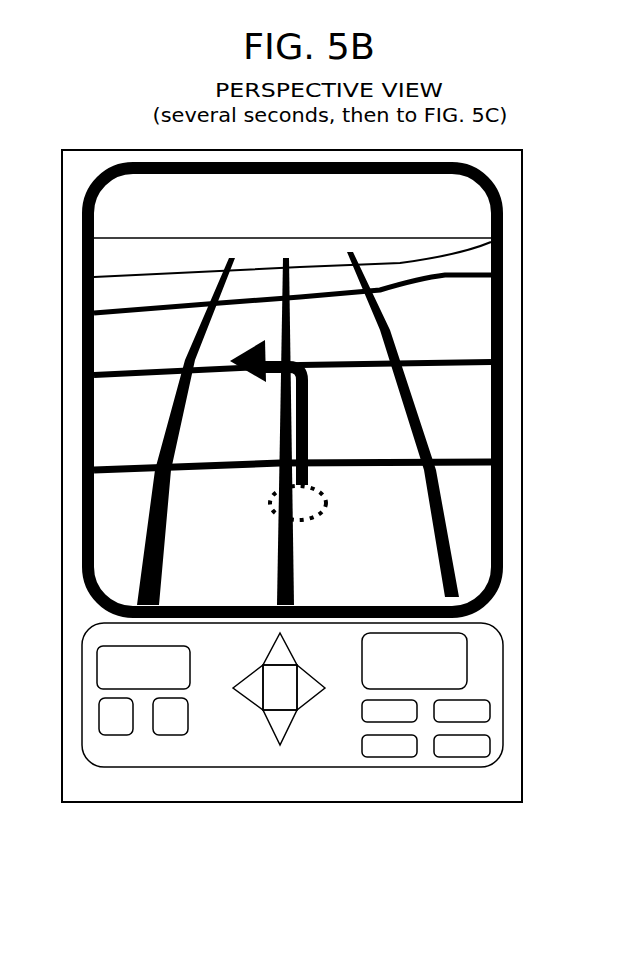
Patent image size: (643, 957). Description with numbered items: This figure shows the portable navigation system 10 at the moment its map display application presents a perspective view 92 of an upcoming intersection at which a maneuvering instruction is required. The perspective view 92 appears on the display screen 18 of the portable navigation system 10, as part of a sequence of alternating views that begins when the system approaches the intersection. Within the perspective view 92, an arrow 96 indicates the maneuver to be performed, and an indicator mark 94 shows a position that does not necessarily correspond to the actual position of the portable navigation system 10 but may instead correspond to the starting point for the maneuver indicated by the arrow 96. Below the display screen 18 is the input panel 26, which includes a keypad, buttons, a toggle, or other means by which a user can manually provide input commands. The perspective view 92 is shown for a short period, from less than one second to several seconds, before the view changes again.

The portable navigation system 10 is at (160, 804).
The perspective view 92 is at (155, 195).
The display screen 18 is at (470, 513).
The arrow 96 is at (307, 404).
The indicator mark 94 is at (320, 518).
The input panel 26 is at (315, 750).